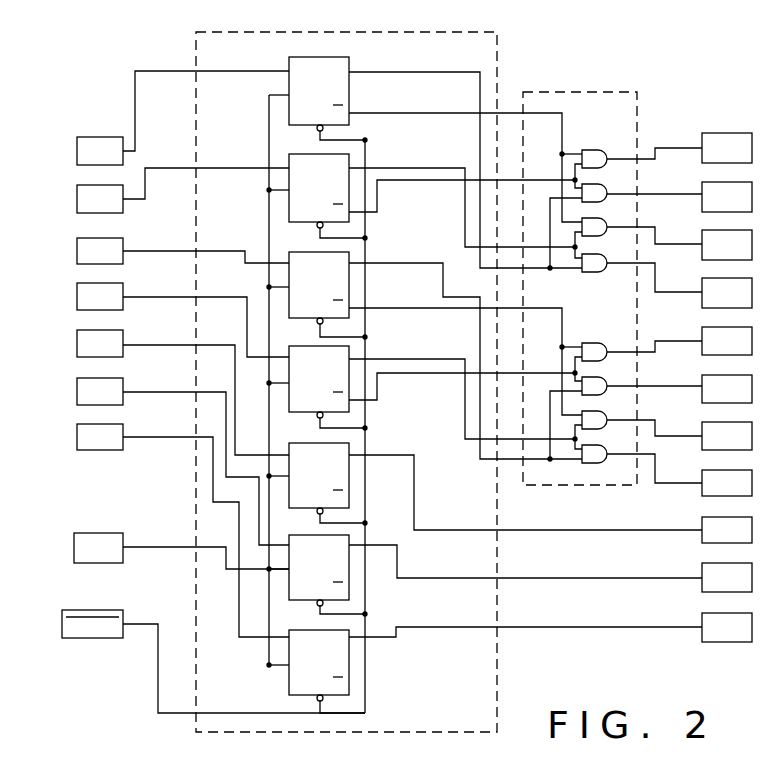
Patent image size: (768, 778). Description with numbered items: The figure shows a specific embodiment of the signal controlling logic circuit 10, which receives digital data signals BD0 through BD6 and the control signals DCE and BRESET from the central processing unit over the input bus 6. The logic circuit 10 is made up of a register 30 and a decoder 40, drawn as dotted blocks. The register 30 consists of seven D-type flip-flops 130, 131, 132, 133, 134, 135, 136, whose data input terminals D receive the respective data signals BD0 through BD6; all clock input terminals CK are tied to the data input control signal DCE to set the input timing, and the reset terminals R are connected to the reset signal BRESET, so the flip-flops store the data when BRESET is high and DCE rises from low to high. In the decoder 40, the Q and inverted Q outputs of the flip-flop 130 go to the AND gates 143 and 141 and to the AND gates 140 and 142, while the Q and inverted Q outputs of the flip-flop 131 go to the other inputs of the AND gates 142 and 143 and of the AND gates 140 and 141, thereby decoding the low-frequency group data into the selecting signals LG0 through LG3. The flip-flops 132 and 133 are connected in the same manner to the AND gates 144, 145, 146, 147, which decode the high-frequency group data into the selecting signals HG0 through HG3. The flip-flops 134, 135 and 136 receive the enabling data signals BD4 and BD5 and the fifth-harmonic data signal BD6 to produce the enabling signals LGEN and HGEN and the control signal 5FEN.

The logic circuit for controlling signals 10 is at (683, 71).
The register 30 is at (195, 53).
The decoder 40 is at (581, 92).
The input bus 6 is at (162, 234).
The D-type flip-flop 130 is at (350, 96).
The D-type flip-flop 131 is at (289, 223).
The D-type flip-flop 132 is at (289, 317).
The D-type flip-flop 133 is at (289, 412).
The D-type flip-flop 134 is at (289, 508).
The D-type flip-flop 135 is at (289, 600).
The D-type flip-flop 136 is at (289, 680).
The AND gate 140 is at (593, 149).
The AND gate 141 is at (596, 184).
The AND gate 142 is at (596, 222).
The AND gate 143 is at (596, 258).
The AND gate 144 is at (595, 342).
The AND gate 145 is at (596, 377).
The AND gate 146 is at (596, 412).
The AND gate 147 is at (596, 445).